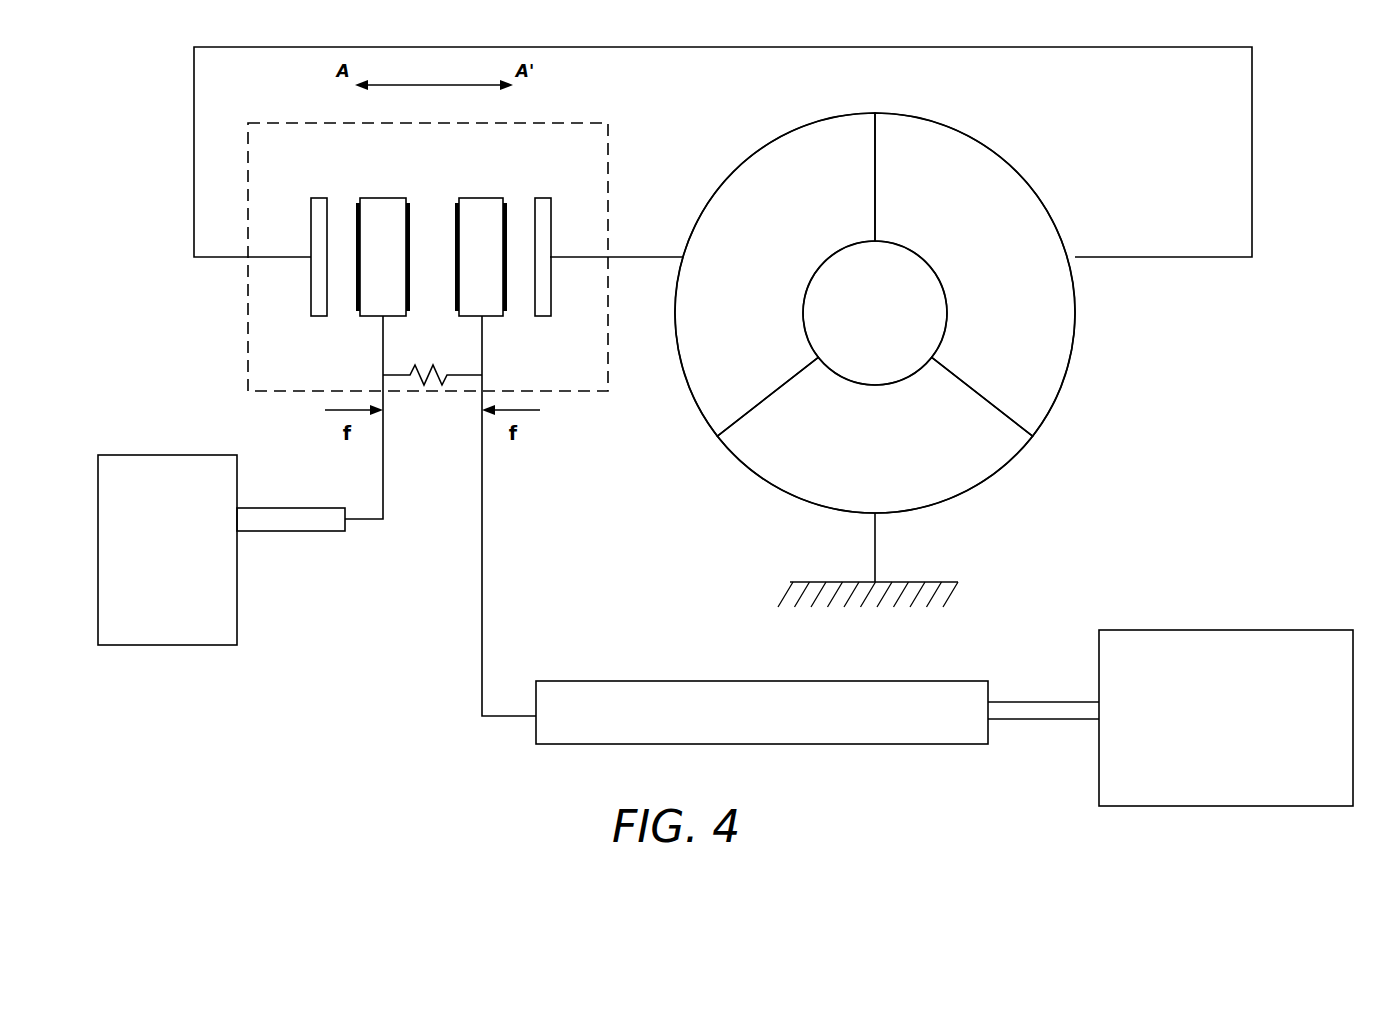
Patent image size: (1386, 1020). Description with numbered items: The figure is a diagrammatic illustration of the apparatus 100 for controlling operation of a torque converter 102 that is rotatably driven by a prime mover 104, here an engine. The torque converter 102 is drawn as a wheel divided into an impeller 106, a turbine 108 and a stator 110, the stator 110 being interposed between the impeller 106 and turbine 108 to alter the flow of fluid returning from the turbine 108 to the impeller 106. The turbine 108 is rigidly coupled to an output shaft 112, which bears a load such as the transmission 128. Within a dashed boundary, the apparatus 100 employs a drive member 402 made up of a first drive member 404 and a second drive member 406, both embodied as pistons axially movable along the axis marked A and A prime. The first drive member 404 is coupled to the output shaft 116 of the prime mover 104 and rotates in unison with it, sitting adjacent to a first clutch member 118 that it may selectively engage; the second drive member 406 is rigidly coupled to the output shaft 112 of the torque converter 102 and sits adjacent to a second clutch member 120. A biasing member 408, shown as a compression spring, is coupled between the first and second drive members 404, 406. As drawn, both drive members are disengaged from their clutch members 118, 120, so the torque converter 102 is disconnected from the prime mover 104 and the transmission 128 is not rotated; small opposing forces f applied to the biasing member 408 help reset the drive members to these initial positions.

The apparatus 100 is at (624, 148).
The torque converter 102 is at (893, 356).
The prime mover 104 is at (162, 560).
The impeller 106 is at (977, 286).
The turbine 108 is at (730, 292).
The stator 110 is at (862, 464).
The output shaft 112 is at (725, 724).
The output shaft 116 is at (282, 507).
The first clutch member 118 is at (319, 197).
The second clutch member 120 is at (543, 197).
The transmission 128 is at (1212, 736).
The drive member 402 is at (432, 227).
The first drive member 404 is at (397, 266).
The second drive member 406 is at (481, 257).
The biasing member 408 is at (438, 388).